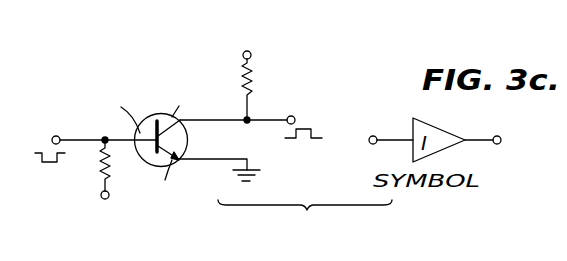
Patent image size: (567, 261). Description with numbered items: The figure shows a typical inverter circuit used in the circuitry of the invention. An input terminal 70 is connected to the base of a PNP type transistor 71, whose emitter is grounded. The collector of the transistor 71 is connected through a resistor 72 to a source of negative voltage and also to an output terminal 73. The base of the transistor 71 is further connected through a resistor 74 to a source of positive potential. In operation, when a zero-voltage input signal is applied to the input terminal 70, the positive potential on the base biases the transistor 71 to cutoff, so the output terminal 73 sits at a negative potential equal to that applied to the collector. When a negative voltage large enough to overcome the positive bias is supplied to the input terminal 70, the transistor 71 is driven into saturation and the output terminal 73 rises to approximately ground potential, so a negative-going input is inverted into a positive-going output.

The input terminal 70 is at (57, 136).
The PNP type transistor 71 is at (158, 113).
The resistor 72 is at (256, 97).
The output terminal 73 is at (296, 118).
The resistor 74 is at (97, 156).